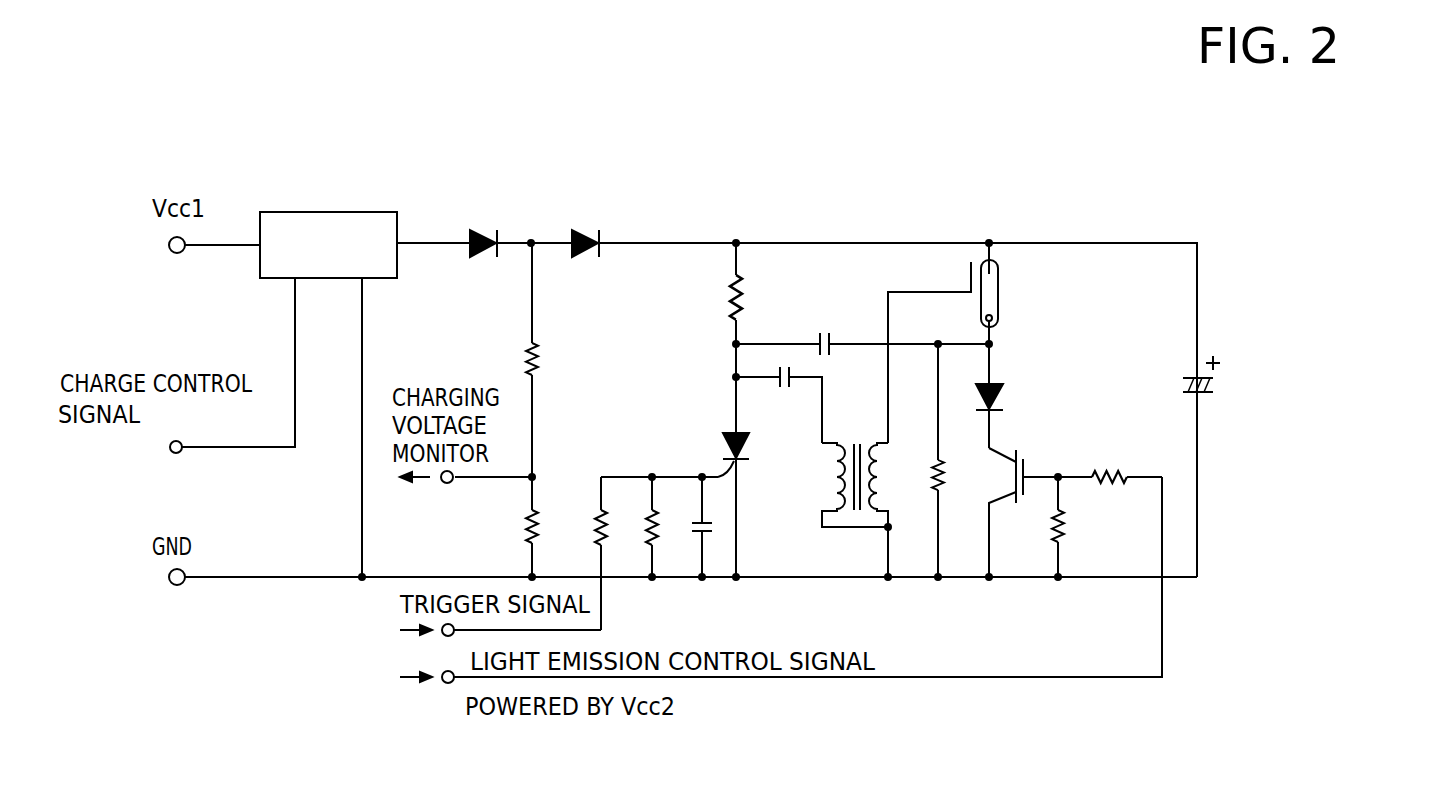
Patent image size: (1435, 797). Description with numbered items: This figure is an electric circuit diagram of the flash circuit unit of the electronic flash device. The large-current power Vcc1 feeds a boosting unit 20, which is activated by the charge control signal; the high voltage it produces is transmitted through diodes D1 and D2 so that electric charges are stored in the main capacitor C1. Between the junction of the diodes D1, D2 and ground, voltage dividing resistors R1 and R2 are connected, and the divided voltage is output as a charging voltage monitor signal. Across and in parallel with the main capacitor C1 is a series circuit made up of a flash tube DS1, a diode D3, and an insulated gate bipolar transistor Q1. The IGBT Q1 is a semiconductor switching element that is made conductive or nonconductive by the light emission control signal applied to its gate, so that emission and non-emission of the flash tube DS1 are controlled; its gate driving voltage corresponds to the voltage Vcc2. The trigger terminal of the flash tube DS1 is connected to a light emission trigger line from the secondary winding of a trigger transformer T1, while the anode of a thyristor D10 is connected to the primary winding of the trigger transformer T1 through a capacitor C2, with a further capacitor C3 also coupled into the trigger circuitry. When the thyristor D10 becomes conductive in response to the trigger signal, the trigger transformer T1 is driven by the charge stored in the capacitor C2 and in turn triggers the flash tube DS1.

The boosting unit 20 is at (370, 212).
The diode D1 is at (480, 228).
The diode D2 is at (586, 228).
The voltage dividing resistor R1 is at (554, 360).
The voltage dividing resistor R2 is at (514, 527).
The thyristor D10 is at (712, 453).
The capacitor C2 is at (779, 405).
The capacitor C3 is at (862, 331).
The trigger transformer T1 is at (836, 488).
The flash tube DS1 is at (1066, 293).
The diode D3 is at (1010, 396).
The insulated gate bipolar transistor Q1 is at (1017, 512).
The main capacitor C1 is at (1295, 393).